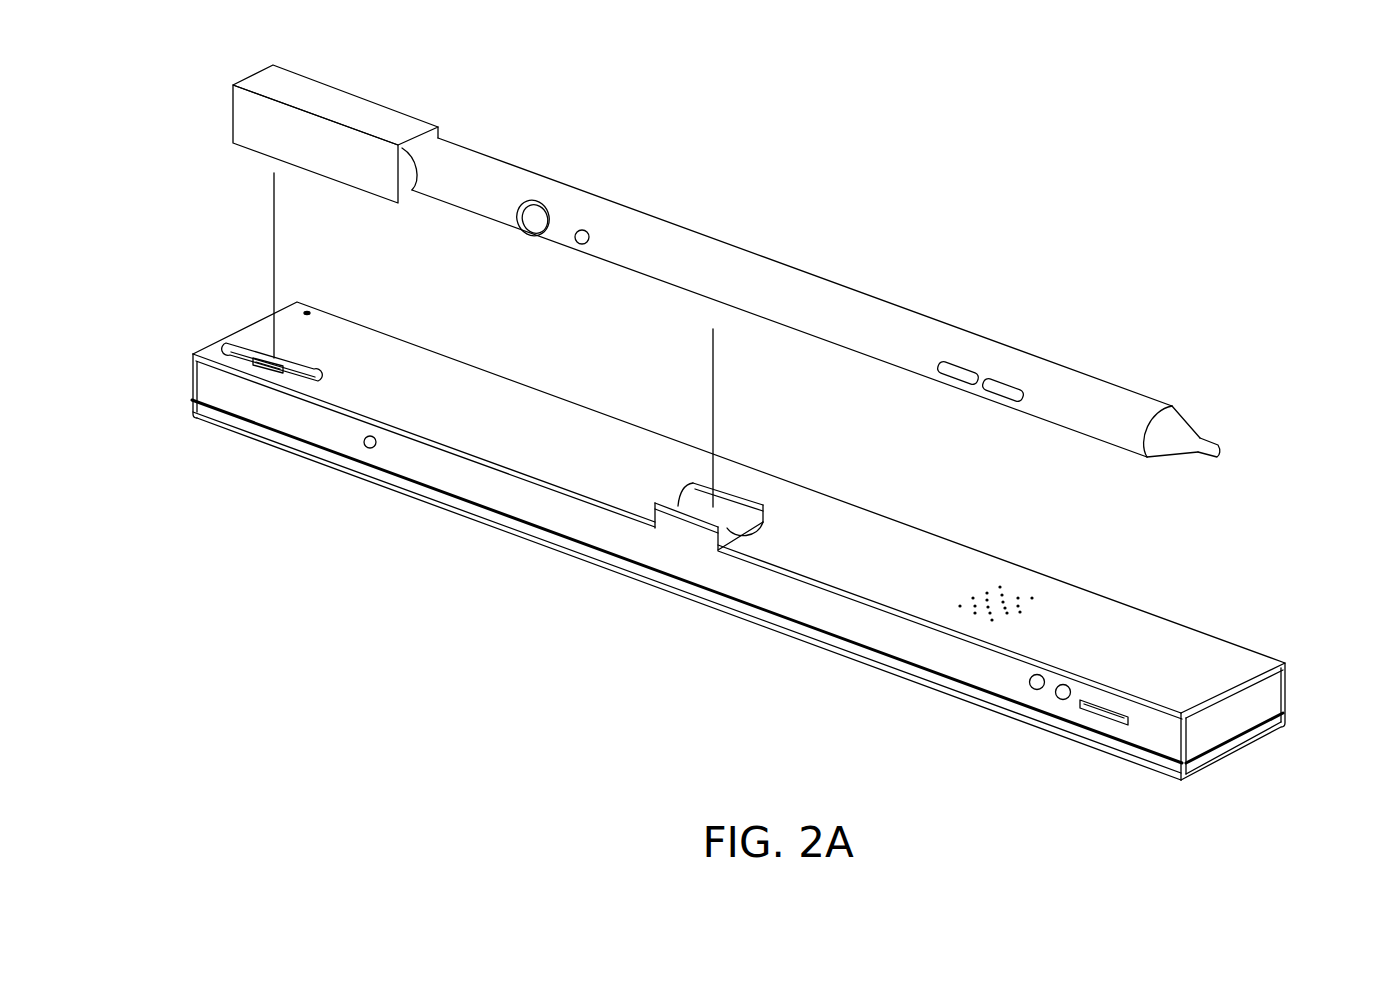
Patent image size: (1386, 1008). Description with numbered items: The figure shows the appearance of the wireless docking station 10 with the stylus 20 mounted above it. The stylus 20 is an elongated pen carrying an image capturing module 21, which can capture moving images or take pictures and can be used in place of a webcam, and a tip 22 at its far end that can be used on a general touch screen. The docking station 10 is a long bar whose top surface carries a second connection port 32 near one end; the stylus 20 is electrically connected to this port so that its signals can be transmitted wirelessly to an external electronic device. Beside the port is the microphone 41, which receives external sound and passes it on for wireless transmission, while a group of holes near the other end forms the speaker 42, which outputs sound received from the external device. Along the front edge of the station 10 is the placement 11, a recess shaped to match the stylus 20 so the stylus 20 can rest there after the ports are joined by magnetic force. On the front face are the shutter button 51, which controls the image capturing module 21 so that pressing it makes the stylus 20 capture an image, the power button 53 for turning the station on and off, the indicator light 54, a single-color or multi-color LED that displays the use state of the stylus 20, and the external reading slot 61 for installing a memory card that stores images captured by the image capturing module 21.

The wireless docking station 10 is at (750, 543).
The placement 11 is at (655, 494).
The stylus 20 is at (732, 261).
The image capturing module 21 is at (538, 203).
The tip 22 is at (1204, 444).
The second connection port 32 is at (217, 350).
The microphone 41 is at (307, 313).
The speaker 42 is at (1015, 583).
The shutter button 51 is at (1030, 690).
The power button 53 is at (1070, 703).
The indicator light 54 is at (372, 449).
The external reading slot 61 is at (1137, 747).